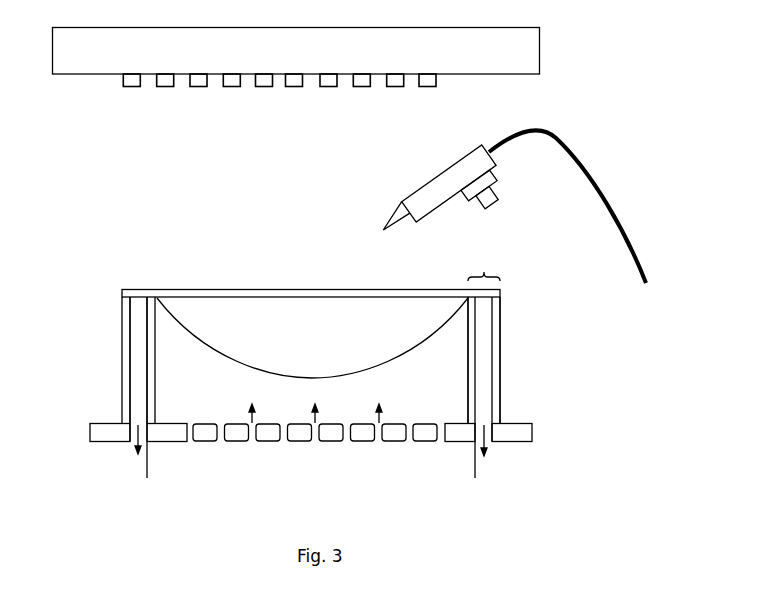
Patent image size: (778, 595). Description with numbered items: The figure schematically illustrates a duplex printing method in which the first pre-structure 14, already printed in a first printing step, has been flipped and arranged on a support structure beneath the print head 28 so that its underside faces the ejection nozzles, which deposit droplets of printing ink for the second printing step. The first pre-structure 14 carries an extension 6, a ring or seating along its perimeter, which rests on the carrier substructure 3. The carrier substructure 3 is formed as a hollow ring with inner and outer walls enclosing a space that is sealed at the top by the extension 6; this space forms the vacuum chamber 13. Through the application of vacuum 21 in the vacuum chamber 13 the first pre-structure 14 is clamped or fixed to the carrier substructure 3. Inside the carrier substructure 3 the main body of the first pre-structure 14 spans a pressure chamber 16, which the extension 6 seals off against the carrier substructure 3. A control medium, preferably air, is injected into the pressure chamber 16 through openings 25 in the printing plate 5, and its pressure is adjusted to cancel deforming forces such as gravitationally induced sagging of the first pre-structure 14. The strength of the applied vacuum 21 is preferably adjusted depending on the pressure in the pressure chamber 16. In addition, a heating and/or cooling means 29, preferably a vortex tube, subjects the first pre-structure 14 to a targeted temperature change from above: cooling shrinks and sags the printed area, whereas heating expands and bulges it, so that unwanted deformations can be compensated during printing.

The print head 28 is at (512, 62).
The heating and/or cooling means 29 is at (480, 165).
The extension 6 is at (484, 261).
The vacuum chamber 13 is at (141, 312).
The first pre-structure 14 is at (215, 328).
The carrier substructure 3 is at (125, 367).
The printing plate 5 is at (112, 432).
The application of vacuum 21 is at (314, 444).
The openings in printing plate 25 is at (190, 437).
The pressure chamber 16 is at (446, 386).